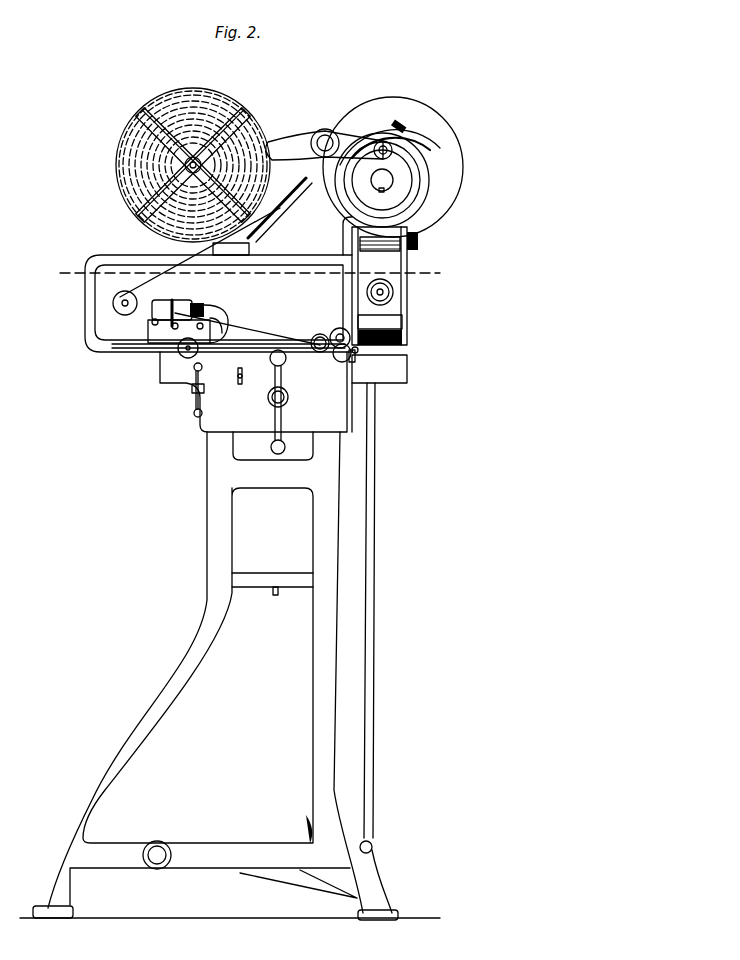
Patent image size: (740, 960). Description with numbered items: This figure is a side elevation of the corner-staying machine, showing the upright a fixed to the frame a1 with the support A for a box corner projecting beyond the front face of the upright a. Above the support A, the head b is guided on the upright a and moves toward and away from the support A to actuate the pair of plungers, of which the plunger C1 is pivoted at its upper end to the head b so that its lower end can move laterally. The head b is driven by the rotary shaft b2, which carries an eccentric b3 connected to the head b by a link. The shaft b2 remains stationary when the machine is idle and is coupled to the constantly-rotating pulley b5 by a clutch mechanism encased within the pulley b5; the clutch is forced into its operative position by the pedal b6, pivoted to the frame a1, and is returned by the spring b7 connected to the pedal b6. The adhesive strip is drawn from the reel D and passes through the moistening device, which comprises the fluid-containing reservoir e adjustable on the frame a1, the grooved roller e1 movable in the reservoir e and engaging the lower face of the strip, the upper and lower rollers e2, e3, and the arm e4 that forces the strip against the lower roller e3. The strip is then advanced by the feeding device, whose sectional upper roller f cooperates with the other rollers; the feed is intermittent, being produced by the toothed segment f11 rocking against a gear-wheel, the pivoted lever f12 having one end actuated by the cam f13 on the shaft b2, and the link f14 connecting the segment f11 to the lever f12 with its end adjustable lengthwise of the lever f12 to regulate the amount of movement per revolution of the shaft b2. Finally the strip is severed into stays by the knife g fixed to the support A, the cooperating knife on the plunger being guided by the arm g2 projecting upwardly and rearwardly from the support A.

The reel D is at (243, 124).
The link f14 is at (293, 188).
The head b is at (414, 238).
The pulley b5 is at (455, 194).
The cam f13 is at (402, 188).
The rotary shaft b2 is at (372, 184).
The eccentric b3 is at (404, 146).
The pivoted lever f12 is at (357, 147).
The plunger C1 is at (400, 336).
The support A is at (400, 370).
The upright a is at (337, 396).
The knife g is at (384, 395).
The arm g2 is at (348, 362).
The lower roller e3 is at (150, 308).
The fluid-containing reservoir e is at (162, 348).
The arm e4 is at (160, 310).
The upper roller e2 is at (190, 308).
The roller e1 is at (206, 320).
The upper roller f is at (316, 334).
The toothed segment f11 is at (338, 328).
The frame a1 is at (313, 527).
The pedal b6 is at (350, 890).
The spring b7 is at (306, 828).